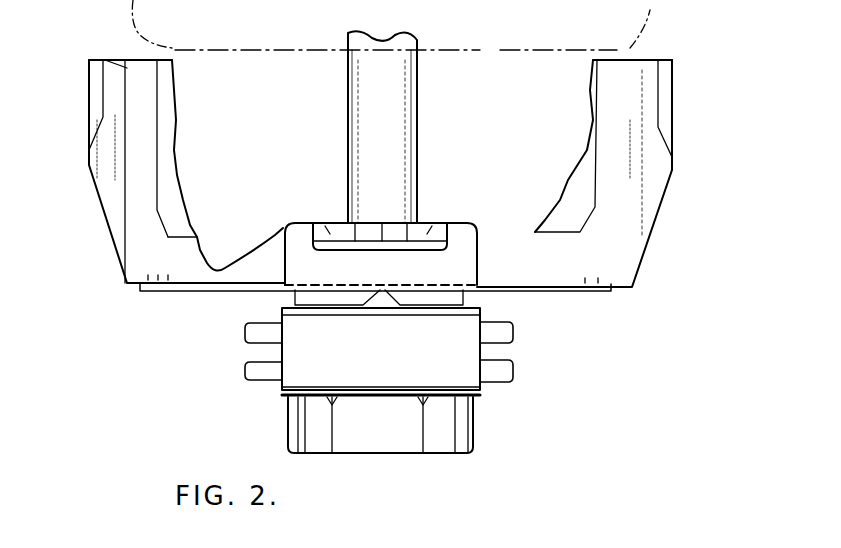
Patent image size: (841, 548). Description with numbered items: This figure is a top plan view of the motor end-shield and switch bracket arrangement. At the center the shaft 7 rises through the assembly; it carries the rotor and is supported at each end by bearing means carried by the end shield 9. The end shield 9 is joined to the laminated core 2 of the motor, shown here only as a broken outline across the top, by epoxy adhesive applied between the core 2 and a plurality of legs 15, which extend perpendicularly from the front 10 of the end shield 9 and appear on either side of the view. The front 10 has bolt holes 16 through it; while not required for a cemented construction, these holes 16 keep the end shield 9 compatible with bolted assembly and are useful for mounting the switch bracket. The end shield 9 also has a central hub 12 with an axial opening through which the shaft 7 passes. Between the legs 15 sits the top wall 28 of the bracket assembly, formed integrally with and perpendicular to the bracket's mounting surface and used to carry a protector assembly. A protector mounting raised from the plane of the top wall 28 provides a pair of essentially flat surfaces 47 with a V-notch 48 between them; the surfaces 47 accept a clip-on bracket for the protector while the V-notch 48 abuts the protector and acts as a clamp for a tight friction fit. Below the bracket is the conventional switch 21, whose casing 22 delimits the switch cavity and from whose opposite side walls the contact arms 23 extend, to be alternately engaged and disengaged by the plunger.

The laminated core 2 is at (520, 50).
The shaft 7 is at (355, 152).
The end shield 9 is at (674, 228).
The front 10 is at (128, 292).
The central hub 12 is at (378, 440).
The legs 15 is at (110, 62).
The bolt holes 16 is at (162, 278).
The switch 21 is at (228, 378).
The casing 22 is at (302, 380).
The contact arms 23 is at (260, 330).
The top wall 28 is at (290, 242).
The flat surfaces 47 is at (320, 232).
The V-notch 48 is at (390, 233).